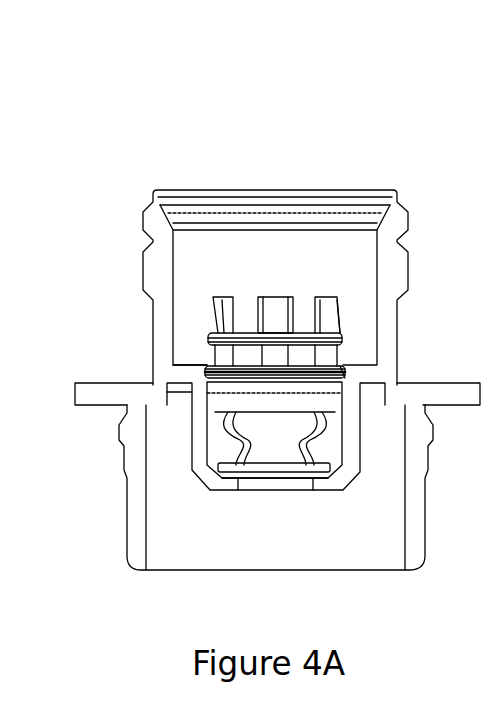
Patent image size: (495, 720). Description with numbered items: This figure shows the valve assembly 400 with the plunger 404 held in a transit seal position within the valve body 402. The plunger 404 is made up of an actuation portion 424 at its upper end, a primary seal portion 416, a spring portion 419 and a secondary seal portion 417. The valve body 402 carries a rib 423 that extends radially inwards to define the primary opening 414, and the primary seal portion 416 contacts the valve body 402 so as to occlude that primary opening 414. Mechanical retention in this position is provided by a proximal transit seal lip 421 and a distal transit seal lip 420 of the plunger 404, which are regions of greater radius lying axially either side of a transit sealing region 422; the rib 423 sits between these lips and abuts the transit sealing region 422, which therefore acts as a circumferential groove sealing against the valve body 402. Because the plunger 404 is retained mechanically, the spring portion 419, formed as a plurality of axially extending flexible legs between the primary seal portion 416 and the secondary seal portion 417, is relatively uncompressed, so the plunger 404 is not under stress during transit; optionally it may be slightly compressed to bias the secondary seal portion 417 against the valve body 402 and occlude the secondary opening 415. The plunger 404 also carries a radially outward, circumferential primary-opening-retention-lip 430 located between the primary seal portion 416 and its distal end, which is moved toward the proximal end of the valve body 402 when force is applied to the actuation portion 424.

The valve assembly 400 is at (128, 118).
The valve body 402 is at (152, 240).
The plunger 404 is at (342, 316).
The primary opening 414 is at (333, 392).
The secondary opening 415 is at (292, 488).
The primary seal portion 416 is at (255, 375).
The secondary seal portion 417 is at (245, 465).
The spring portion 419 is at (220, 464).
The distal transit seal lip 420 is at (226, 368).
The proximal transit seal lip 421 is at (212, 373).
The transit sealing region 422 is at (272, 375).
The rib 423 is at (345, 371).
The actuation portion 424 is at (280, 308).
The primary-opening-retention-lip 430 is at (226, 336).